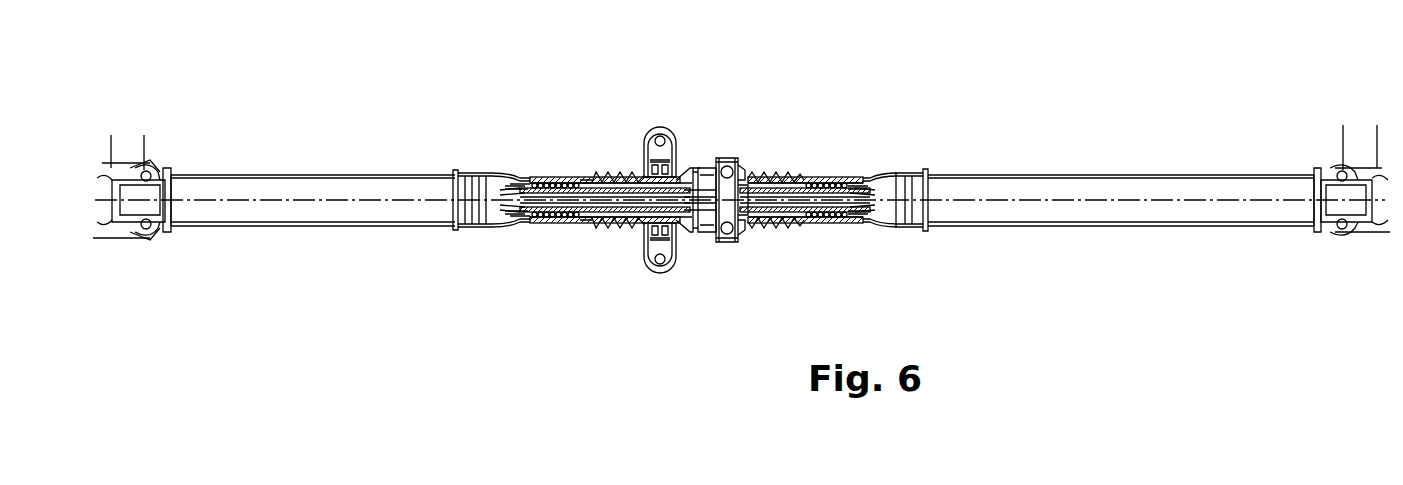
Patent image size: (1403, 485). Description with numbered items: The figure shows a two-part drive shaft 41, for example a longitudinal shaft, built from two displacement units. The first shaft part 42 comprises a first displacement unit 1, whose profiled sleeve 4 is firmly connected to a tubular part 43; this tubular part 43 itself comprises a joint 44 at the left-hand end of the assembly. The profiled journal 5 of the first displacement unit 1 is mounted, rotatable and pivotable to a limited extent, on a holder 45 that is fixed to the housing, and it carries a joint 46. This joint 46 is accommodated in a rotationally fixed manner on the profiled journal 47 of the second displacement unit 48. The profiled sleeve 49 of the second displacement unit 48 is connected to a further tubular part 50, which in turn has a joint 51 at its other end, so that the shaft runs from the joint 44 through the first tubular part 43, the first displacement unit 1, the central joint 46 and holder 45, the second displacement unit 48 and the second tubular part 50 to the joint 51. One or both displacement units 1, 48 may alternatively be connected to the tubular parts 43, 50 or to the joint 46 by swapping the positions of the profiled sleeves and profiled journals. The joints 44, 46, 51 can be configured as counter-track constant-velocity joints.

The first displacement unit 1 is at (545, 222).
The profiled sleeve 4 is at (522, 212).
The profiled journal 5 is at (643, 232).
The two-part drive shaft 41 is at (853, 154).
The first shaft part 42 is at (398, 165).
The tubular part 43 is at (338, 229).
The joint 44 is at (170, 233).
The holder 45 is at (666, 140).
The joint 46 is at (703, 222).
The profiled journal 47 is at (743, 223).
The second displacement unit 48 is at (842, 222).
The profiled sleeve 49 is at (910, 226).
The tubular part 50 is at (1141, 227).
The joint 51 is at (1327, 228).